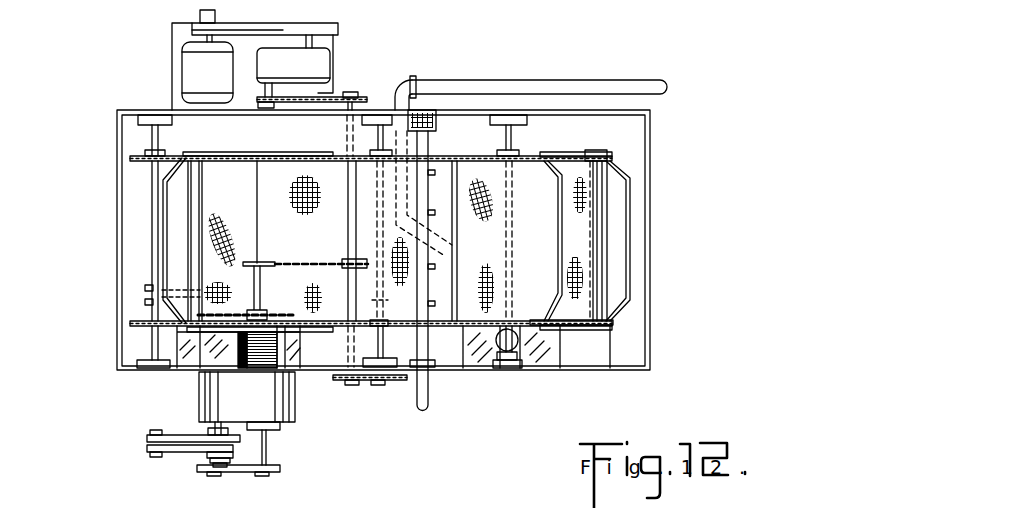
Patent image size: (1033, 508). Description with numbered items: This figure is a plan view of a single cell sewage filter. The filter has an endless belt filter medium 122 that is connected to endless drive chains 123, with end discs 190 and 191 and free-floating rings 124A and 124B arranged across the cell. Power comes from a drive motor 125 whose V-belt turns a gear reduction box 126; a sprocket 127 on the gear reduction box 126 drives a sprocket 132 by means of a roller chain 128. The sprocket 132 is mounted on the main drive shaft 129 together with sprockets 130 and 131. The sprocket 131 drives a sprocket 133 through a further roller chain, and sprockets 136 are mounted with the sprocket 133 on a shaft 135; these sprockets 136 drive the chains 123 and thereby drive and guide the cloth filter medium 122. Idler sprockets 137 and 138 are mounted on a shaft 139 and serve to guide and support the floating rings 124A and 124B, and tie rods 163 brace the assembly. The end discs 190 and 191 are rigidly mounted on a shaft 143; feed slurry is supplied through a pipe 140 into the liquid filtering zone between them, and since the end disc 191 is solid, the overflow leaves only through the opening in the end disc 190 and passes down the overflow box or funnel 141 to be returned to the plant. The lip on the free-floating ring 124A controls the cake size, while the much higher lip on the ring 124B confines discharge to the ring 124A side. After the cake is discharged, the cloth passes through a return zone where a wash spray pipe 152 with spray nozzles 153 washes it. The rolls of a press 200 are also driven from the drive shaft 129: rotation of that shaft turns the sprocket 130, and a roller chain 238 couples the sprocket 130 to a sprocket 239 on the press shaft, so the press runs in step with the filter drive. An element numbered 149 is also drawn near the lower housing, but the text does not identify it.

The drive motor 125 is at (181, 59).
The gear reduction box 126 is at (323, 57).
The sprocket 127 is at (263, 104).
The roller chain 128 is at (299, 104).
The shaft 129 is at (346, 137).
The sprocket 132 is at (367, 99).
The pipe 140 is at (660, 82).
The free-floating ring 124B is at (220, 152).
The free-floating ring 124A is at (320, 333).
The spray nozzles 153 is at (431, 173).
The end disc 191 is at (600, 157).
The endless drive chains 123 is at (612, 157).
The endless belt filter medium 122 is at (585, 208).
The tie rods 163 is at (632, 247).
The shaft 143 is at (496, 238).
The idler sprocket 138 is at (140, 162).
The shaft 139 is at (152, 250).
The idler sprocket 137 is at (135, 323).
The sprockets 136 is at (385, 336).
The sprocket 239 is at (250, 256).
The sprocket 130 is at (340, 262).
The roller chain 238 is at (320, 270).
The shaft 135 is at (376, 305).
The housing 149 is at (190, 366).
The press 200 is at (171, 412).
The sprocket 131 is at (340, 385).
The sprocket 133 is at (396, 388).
The wash spray pipe 152 is at (430, 398).
The overflow box or funnel 141 is at (545, 362).
The end disc 190 is at (595, 330).